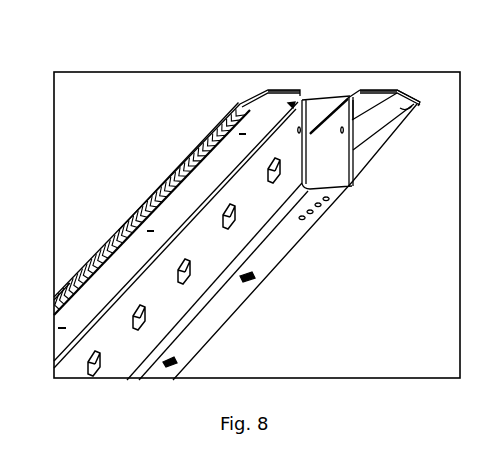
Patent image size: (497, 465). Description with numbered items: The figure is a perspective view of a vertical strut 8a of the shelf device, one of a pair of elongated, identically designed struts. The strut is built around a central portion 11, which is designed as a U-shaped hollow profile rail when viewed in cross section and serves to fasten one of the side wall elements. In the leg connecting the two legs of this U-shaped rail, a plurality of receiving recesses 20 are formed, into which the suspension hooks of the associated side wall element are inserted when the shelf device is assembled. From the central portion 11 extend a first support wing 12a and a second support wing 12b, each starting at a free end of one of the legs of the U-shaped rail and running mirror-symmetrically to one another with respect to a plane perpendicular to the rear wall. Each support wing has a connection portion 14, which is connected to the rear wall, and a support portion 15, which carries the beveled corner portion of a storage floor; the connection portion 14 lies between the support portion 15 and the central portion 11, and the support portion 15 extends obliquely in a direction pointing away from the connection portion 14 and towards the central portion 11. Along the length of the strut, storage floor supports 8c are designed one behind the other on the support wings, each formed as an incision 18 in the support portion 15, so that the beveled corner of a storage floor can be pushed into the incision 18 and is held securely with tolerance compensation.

The vertical strut 8a is at (151, 124).
The storage floor support 8c is at (107, 231).
The central portion 11 is at (285, 242).
The first support wing 12a is at (256, 84).
The second support wing 12b is at (405, 84).
The connection portion 14 is at (278, 102).
The support portion 15 is at (218, 136).
The incision 18 is at (147, 213).
The receiving recess 20 is at (252, 278).